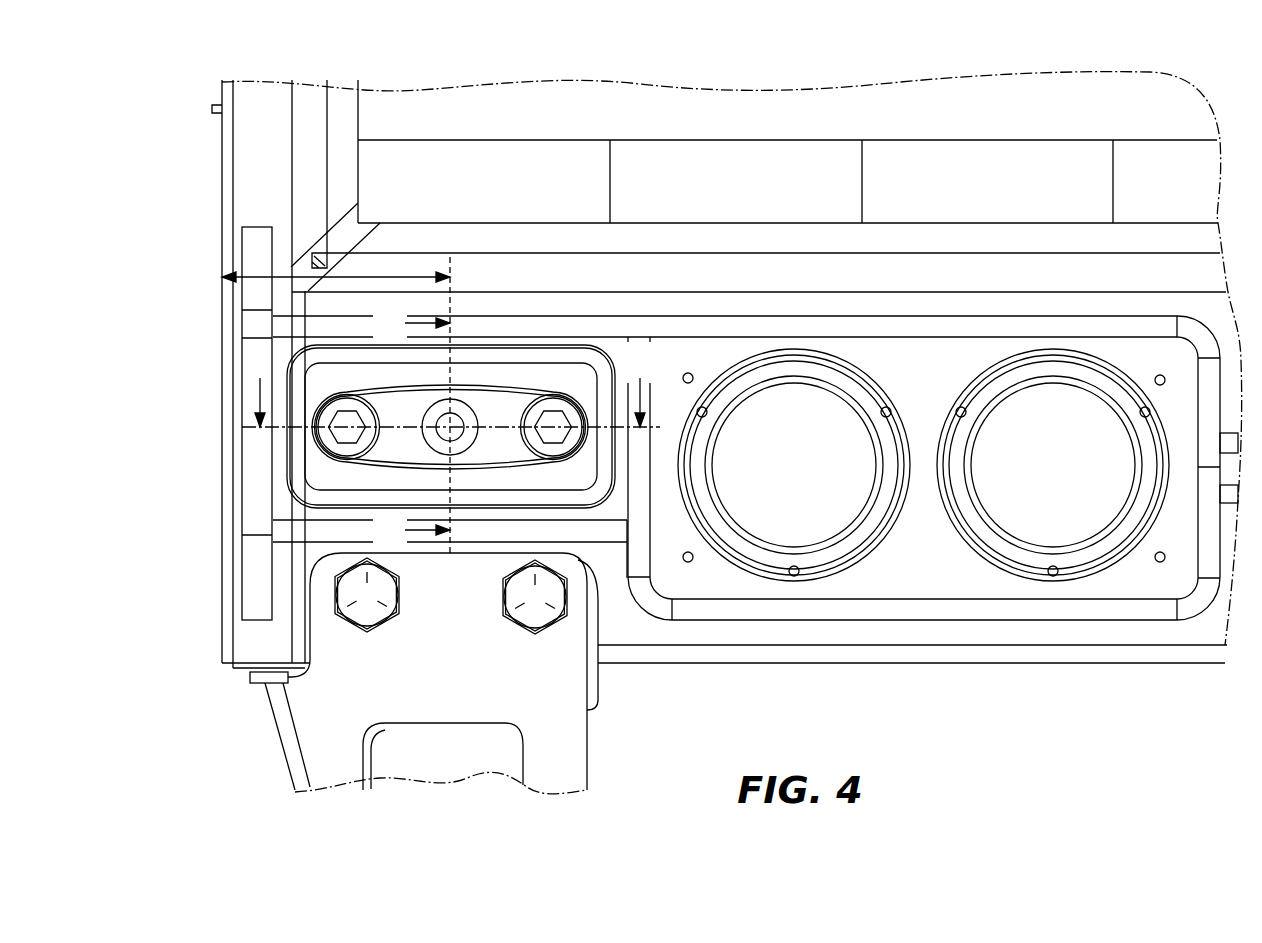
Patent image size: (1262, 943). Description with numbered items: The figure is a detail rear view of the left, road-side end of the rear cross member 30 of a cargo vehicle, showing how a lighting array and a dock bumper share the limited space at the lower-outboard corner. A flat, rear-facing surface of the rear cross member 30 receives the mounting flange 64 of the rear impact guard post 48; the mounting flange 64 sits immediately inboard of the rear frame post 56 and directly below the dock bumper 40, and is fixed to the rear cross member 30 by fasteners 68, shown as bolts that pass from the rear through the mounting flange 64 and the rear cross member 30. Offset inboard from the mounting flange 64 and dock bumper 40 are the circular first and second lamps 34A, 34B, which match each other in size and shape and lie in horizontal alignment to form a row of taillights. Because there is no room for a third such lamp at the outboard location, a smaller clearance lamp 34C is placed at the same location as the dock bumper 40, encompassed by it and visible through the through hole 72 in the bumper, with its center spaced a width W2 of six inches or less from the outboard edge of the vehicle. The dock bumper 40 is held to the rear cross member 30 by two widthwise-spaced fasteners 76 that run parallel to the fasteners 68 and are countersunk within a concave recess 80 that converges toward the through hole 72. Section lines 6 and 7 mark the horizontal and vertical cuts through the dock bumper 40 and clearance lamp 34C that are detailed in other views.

The rear cross member 30 is at (900, 637).
The first lamp 34A is at (1020, 510).
The second lamp 34B is at (793, 507).
The clearance lamp 34C is at (460, 422).
The dock bumper 40 is at (320, 466).
The rear impact guard post 48 is at (570, 739).
The rear frame post 56 is at (222, 582).
The mounting flange 64 is at (420, 583).
The fasteners 68 is at (527, 617).
The hole 72 is at (480, 419).
The fasteners 76 is at (347, 417).
The recess 80 is at (490, 445).
The width W2 is at (283, 273).
The section line 6 is at (452, 382).
The section line 7 is at (417, 426).